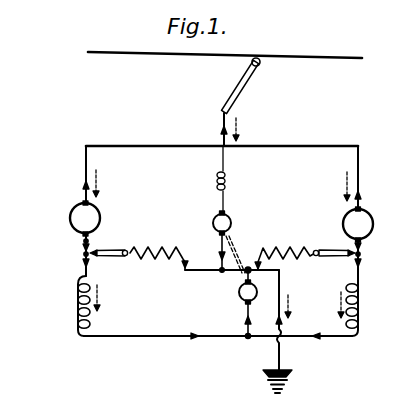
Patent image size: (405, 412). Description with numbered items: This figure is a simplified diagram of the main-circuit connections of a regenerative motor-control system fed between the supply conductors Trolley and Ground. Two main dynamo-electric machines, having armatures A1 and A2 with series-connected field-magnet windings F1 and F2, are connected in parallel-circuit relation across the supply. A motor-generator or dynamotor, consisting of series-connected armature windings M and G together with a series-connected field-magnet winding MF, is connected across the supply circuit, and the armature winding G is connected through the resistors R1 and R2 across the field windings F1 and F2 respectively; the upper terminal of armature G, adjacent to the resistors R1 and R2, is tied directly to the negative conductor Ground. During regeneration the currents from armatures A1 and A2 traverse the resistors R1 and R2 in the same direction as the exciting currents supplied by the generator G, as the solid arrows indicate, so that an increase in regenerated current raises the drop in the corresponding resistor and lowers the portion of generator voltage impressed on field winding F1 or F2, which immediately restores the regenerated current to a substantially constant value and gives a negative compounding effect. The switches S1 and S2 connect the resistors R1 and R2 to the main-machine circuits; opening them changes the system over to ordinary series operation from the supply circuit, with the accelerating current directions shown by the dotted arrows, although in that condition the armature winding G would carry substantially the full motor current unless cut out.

The trolley supply-circuit conductor Trolley is at (225, 83).
The armature A1 is at (69, 218).
The armature A2 is at (370, 224).
The switch S1 is at (109, 247).
The switch S2 is at (334, 247).
The resistor R1 is at (157, 245).
The resistor R2 is at (286, 249).
The field-magnet winding F1 is at (67, 306).
The field-magnet winding F2 is at (366, 309).
The field-magnet winding MF is at (236, 179).
The armature winding M is at (231, 223).
The armature winding G is at (239, 303).
The ground supply-circuit conductor Ground is at (303, 383).